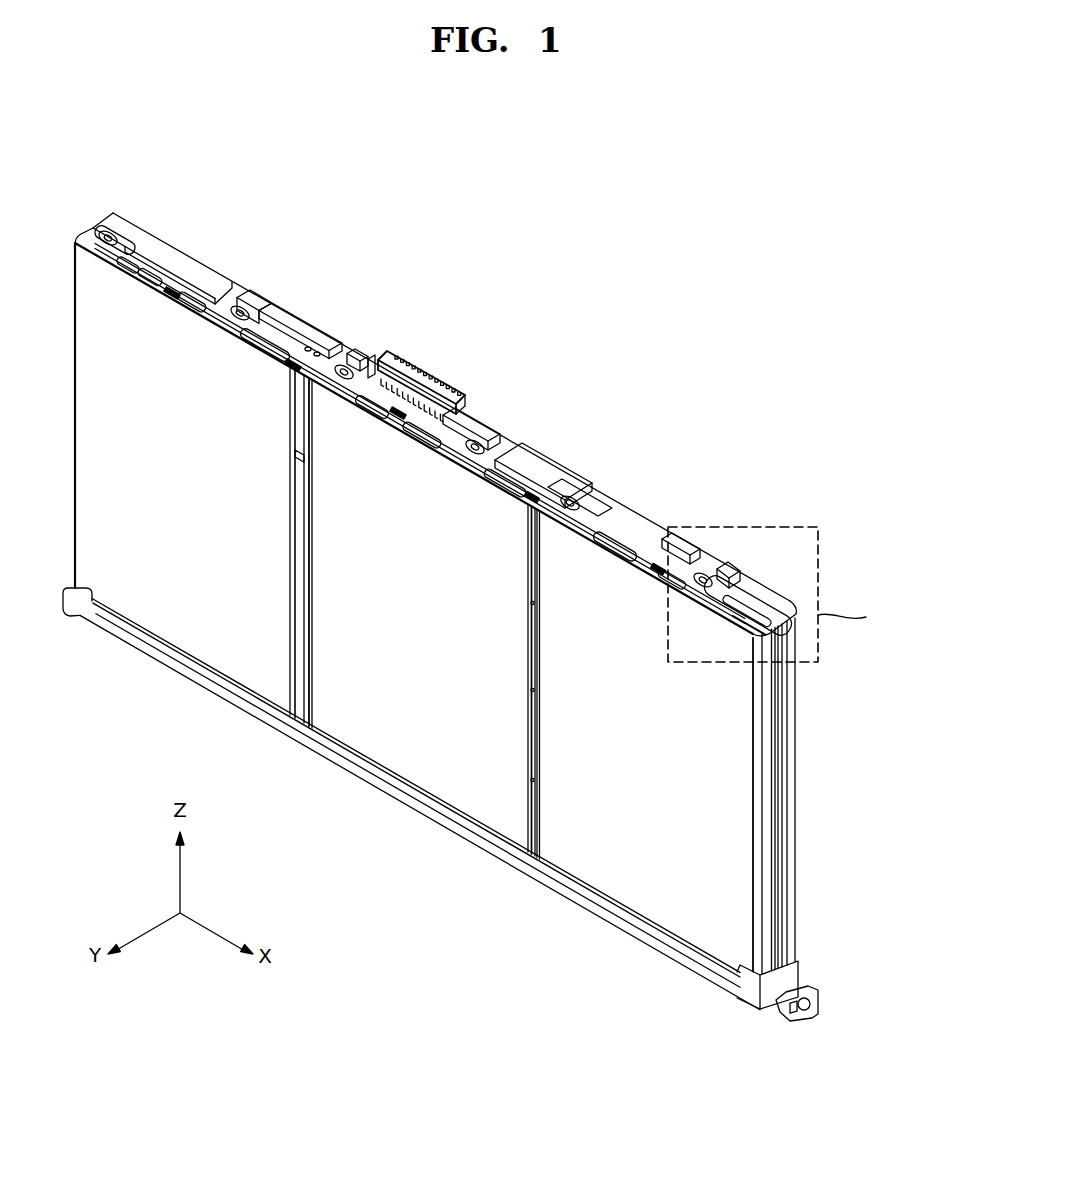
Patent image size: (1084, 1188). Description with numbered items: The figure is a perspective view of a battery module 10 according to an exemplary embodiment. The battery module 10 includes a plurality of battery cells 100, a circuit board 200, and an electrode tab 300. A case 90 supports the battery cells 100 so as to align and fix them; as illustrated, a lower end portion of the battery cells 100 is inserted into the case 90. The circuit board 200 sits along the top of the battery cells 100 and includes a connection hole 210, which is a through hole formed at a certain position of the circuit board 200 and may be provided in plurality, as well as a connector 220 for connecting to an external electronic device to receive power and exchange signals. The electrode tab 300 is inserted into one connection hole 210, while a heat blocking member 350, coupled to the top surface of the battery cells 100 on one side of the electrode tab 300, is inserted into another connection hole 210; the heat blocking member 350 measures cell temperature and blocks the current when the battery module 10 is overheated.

The battery module 10 is at (797, 239).
The case 90 is at (533, 758).
The battery cells 100 is at (812, 791).
The circuit board 200 is at (633, 512).
The connection hole 210 is at (585, 500).
The connector 220 is at (412, 392).
The electrode tab 300 is at (770, 612).
The heat blocking member 350 is at (653, 568).